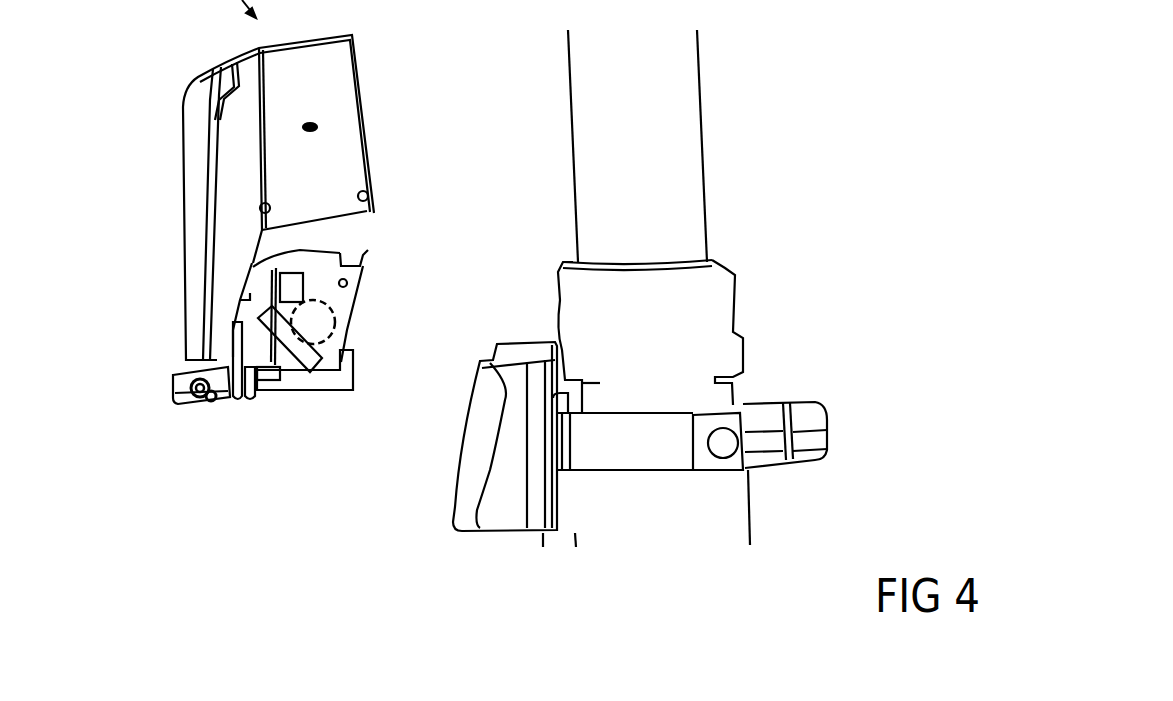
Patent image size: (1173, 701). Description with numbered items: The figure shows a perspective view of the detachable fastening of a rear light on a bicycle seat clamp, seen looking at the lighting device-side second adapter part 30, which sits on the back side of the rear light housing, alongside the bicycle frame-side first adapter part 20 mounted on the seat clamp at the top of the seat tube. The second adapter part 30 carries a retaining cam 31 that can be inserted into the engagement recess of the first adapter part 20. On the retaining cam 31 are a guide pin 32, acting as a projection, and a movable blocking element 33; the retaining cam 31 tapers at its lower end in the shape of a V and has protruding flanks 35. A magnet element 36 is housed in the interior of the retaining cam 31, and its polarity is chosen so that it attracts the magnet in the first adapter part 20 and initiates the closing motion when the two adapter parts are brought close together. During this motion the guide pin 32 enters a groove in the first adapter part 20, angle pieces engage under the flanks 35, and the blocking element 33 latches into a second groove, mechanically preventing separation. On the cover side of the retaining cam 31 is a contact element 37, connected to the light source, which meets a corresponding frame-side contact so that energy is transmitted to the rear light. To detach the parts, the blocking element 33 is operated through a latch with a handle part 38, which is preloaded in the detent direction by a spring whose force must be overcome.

The first adapter part 20 is at (509, 505).
The second adapter part 30 is at (413, 255).
The retaining cam 31 is at (347, 303).
The guide pin 32 is at (363, 260).
The blocking element 33 is at (275, 375).
The protruding flanks 35 is at (280, 328).
The magnet element 36 is at (327, 330).
The contact element 37 is at (292, 288).
The handle part 38 is at (185, 390).